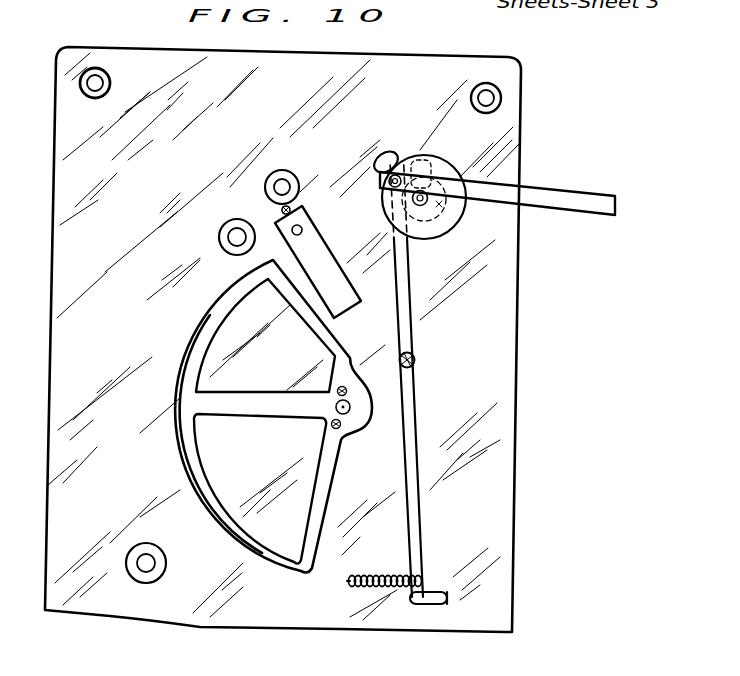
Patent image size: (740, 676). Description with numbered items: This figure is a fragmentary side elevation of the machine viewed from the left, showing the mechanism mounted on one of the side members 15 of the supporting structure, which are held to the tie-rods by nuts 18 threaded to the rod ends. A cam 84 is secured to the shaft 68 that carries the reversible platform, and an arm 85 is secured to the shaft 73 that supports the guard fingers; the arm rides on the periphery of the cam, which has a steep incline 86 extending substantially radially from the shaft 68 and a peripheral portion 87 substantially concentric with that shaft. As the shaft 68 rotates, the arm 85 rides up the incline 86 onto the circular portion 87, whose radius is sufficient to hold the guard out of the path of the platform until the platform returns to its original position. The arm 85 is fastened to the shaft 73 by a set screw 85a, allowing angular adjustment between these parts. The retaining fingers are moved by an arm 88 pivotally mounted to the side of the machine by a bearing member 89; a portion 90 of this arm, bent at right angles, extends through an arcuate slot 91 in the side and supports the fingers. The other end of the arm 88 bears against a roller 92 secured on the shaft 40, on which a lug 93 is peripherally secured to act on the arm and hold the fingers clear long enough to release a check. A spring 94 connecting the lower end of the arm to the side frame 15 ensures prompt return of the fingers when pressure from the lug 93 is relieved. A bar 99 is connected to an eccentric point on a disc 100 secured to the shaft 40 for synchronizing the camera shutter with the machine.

The side member 15 is at (512, 352).
The nut 18 is at (110, 80).
The shaft 40 is at (421, 206).
The shaft 68 is at (347, 412).
The shaft 73 is at (303, 227).
The cam 84 is at (233, 532).
The arm 85 is at (325, 253).
The set screw 85a is at (281, 210).
The steep incline 86 is at (342, 343).
The peripheral portion 87 is at (186, 455).
The arm 88 is at (412, 421).
The bearing member 89 is at (418, 356).
The portion 90 is at (426, 585).
The arcuate slot 91 is at (437, 600).
The roller 92 is at (442, 206).
The lug 93 is at (424, 160).
The spring 94 is at (368, 574).
The bar 99 is at (551, 196).
The disc 100 is at (453, 210).